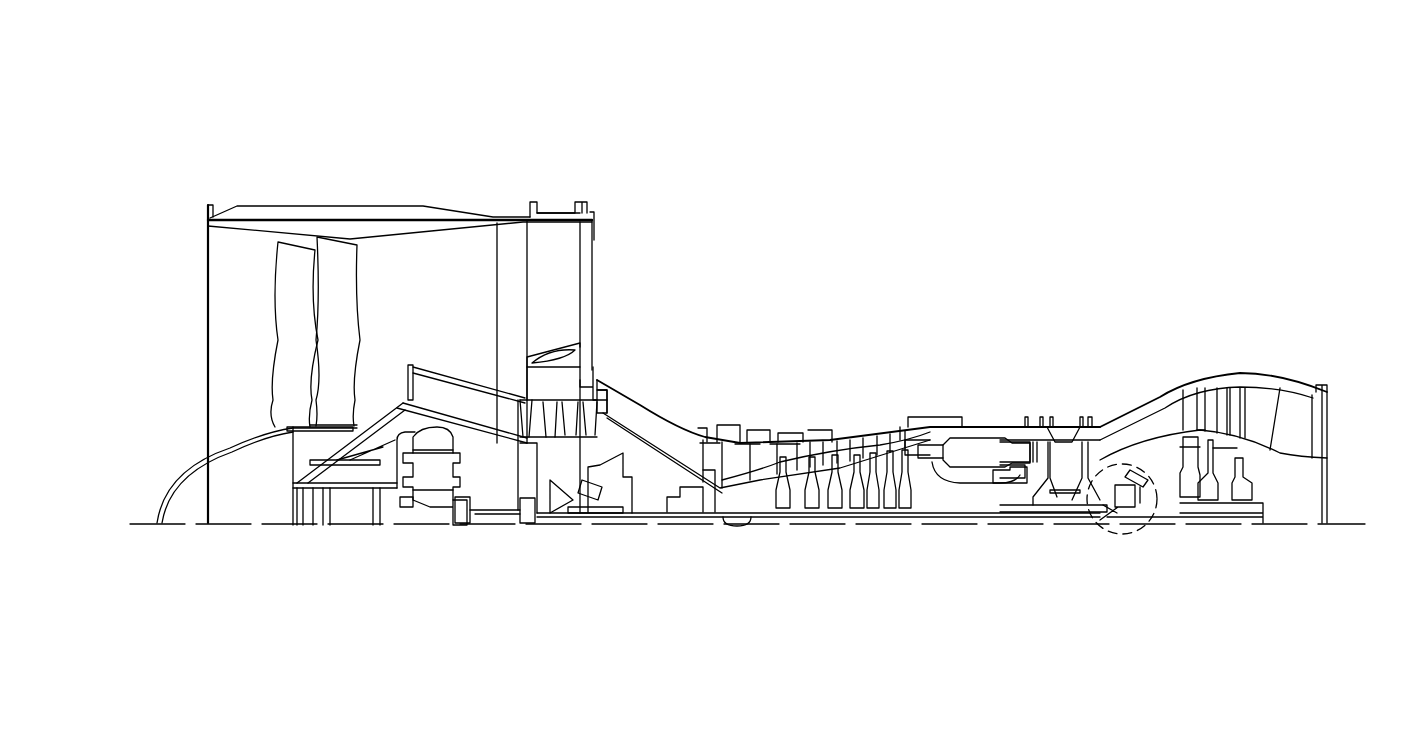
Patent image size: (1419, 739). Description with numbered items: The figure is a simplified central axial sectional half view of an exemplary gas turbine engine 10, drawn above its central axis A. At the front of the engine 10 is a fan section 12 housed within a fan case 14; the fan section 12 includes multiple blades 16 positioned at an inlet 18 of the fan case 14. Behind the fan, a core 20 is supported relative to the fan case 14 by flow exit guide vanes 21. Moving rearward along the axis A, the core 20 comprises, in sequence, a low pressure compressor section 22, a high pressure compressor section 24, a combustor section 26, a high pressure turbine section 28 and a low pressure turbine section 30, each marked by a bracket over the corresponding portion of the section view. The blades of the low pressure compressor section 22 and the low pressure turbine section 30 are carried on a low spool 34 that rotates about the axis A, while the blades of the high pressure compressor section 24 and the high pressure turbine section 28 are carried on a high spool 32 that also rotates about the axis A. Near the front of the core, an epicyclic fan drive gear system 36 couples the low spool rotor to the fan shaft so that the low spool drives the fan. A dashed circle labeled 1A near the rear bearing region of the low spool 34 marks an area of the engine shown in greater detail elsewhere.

The gas turbine engine 10 is at (940, 173).
The fan section 12 is at (392, 185).
The fan case 14 is at (403, 217).
The blades 16 is at (292, 353).
The inlet 18 is at (184, 384).
The core 20 is at (1257, 382).
The flow exit guide vanes 21 is at (569, 297).
The low pressure compressor section 22 is at (645, 393).
The high pressure compressor section 24 is at (648, 395).
The combustor section 26 is at (1025, 395).
The high pressure turbine section 28 is at (1025, 395).
The low pressure turbine section 30 is at (1162, 385).
The high spool 32 is at (950, 508).
The low spool 34 is at (1143, 523).
The epicyclic fan drive gear system 36 is at (425, 550).
The axis A is at (1348, 525).
The detail view region 1A is at (1113, 533).